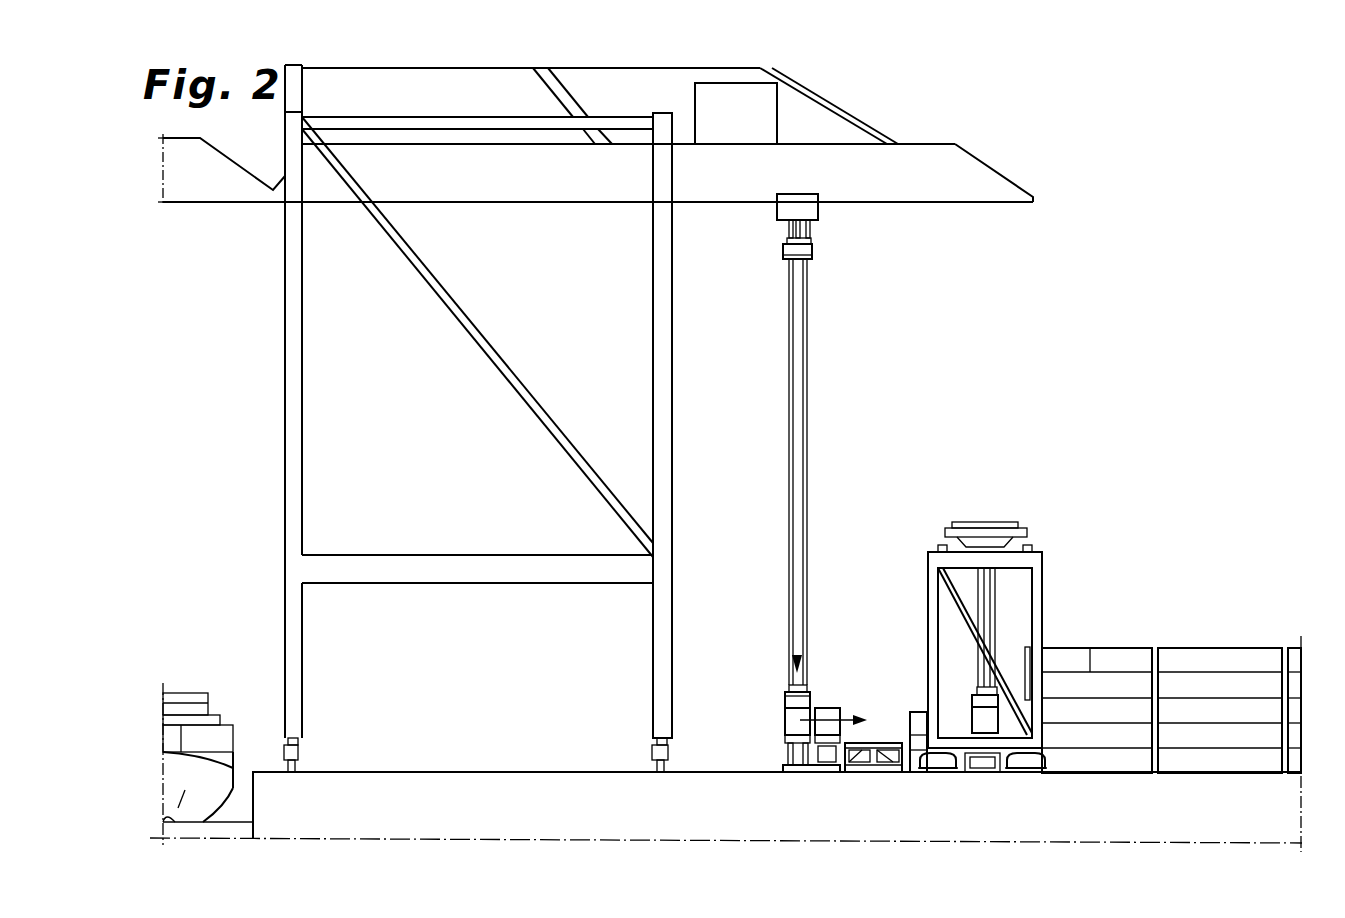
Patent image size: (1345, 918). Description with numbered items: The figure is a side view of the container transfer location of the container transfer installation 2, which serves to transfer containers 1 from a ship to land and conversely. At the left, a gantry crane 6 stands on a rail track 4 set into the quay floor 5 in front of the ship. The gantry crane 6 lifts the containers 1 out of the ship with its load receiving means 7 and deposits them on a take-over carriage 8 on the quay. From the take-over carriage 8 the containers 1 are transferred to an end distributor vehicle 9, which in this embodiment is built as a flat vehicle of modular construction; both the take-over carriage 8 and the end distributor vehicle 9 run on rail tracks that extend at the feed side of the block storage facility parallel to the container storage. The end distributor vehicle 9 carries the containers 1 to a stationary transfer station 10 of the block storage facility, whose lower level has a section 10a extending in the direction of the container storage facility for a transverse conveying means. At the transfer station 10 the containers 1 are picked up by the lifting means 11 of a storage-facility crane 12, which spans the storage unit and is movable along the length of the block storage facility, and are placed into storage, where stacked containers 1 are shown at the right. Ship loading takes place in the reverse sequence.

The container 1 is at (790, 722).
The container transfer installation 2 is at (1152, 219).
The rail track 4 is at (291, 776).
The quay floor 5 is at (695, 771).
The gantry crane 6 is at (663, 352).
The load receiving means 7 is at (785, 252).
The take-over carriage 8 is at (813, 777).
The end distributor vehicle 9 is at (873, 777).
The stationary transfer station 10 is at (970, 778).
The section of the lower level 10a is at (986, 778).
The lifting means 11 is at (975, 690).
The storage-facility crane 12 is at (1042, 588).